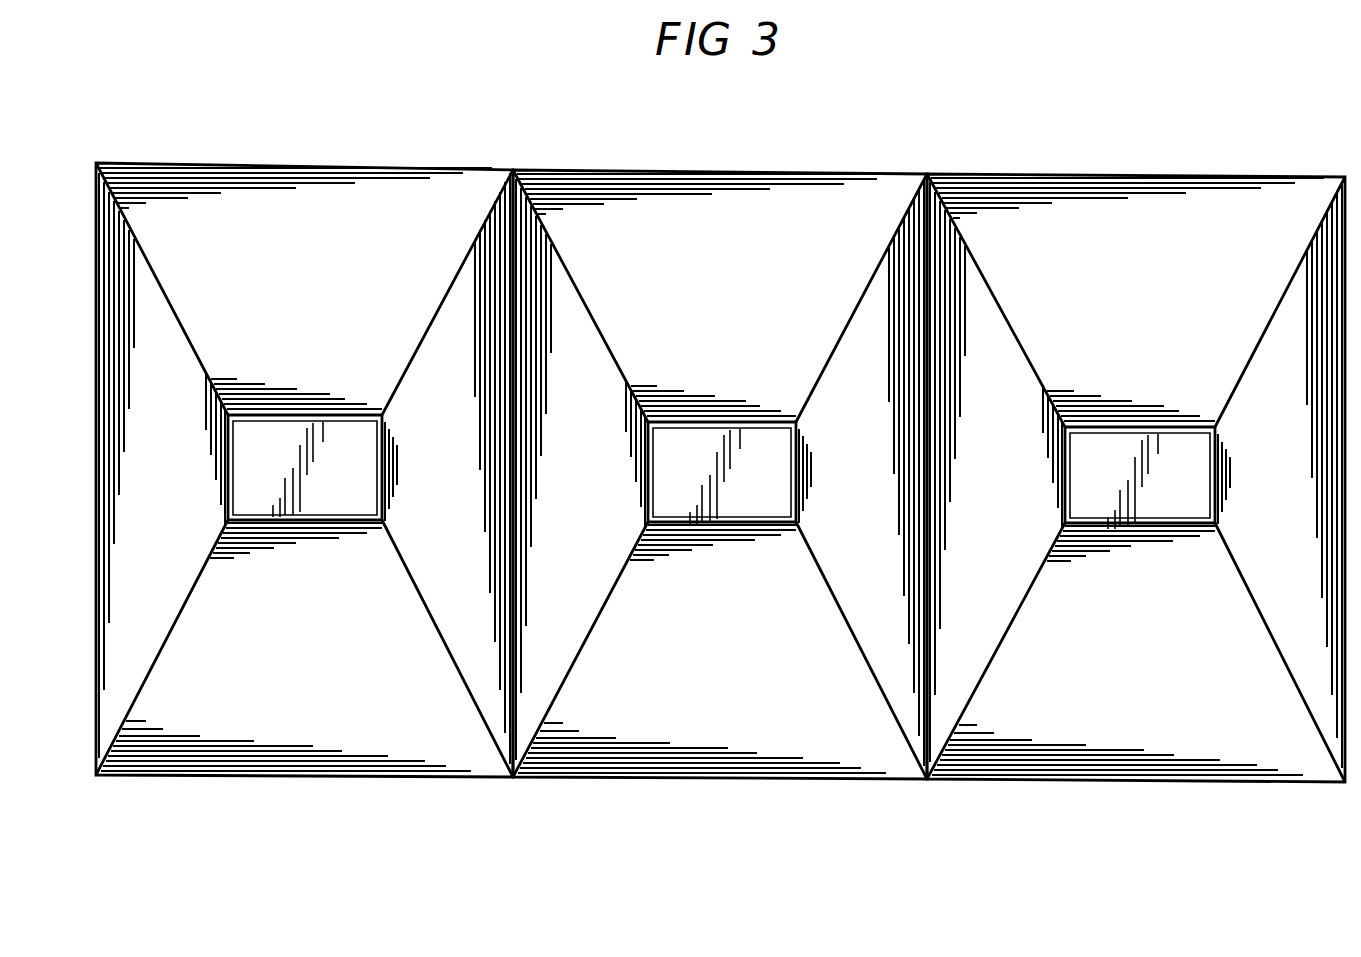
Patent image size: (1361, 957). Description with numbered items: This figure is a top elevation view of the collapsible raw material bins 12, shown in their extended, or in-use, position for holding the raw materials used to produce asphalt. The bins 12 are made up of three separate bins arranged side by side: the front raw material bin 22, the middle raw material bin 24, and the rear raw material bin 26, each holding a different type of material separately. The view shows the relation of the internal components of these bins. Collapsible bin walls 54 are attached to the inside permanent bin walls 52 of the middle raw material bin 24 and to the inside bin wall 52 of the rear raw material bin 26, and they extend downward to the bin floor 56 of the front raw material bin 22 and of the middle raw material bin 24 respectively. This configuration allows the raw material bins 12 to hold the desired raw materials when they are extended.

The raw material bins 12 is at (708, 147).
The front raw material bin 22 is at (1115, 792).
The middle raw material bin 24 is at (737, 789).
The rear raw material bin 26 is at (287, 787).
The inside permanent bin wall 52 is at (148, 407).
The collapsible bin wall 54 is at (570, 567).
The bin floor 56 is at (324, 492).